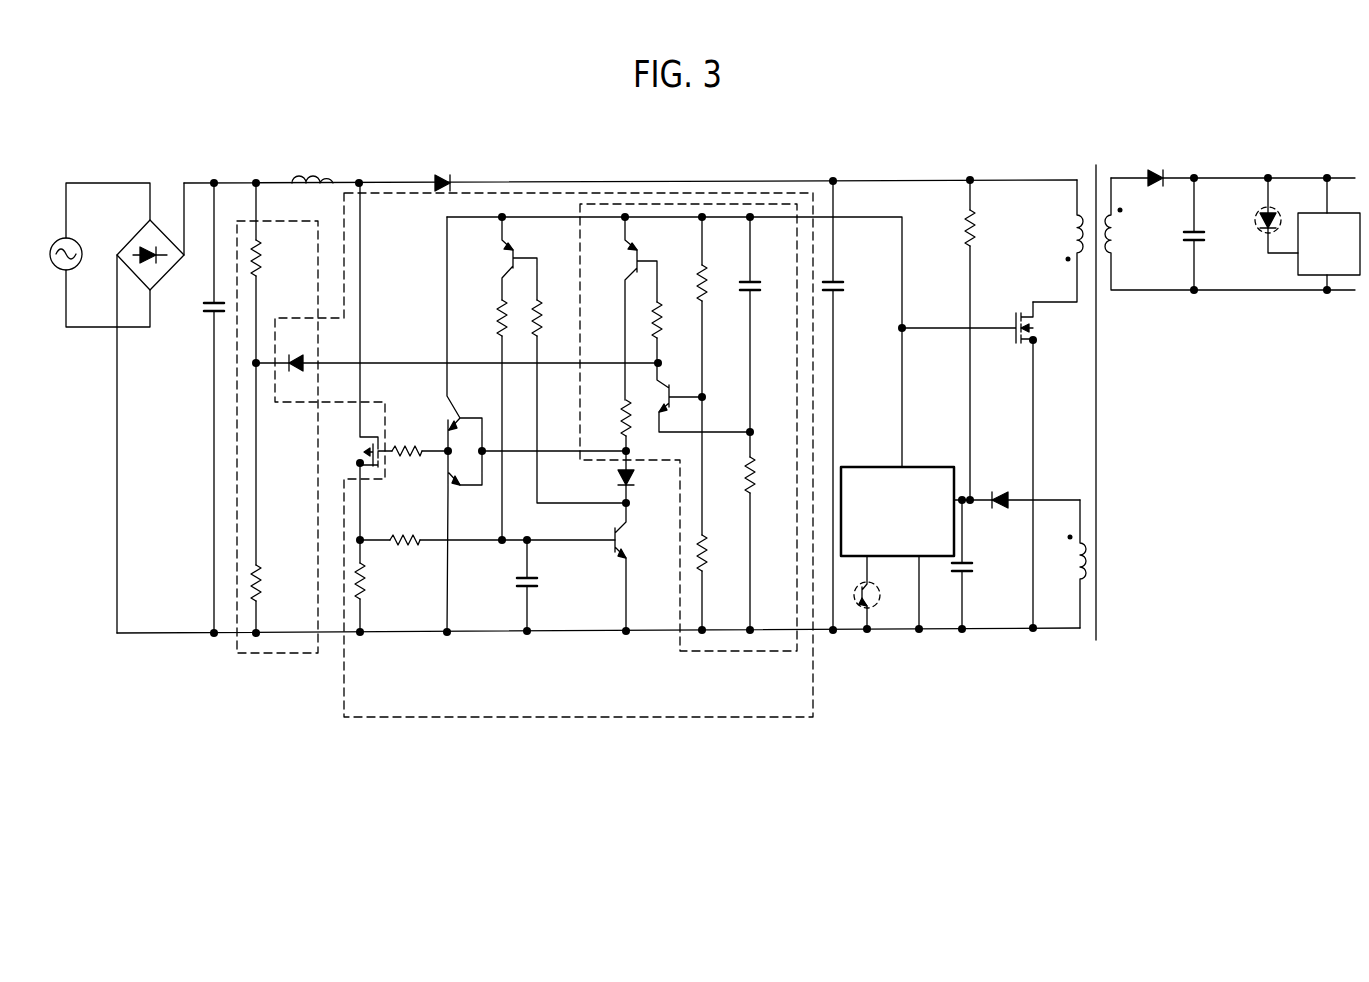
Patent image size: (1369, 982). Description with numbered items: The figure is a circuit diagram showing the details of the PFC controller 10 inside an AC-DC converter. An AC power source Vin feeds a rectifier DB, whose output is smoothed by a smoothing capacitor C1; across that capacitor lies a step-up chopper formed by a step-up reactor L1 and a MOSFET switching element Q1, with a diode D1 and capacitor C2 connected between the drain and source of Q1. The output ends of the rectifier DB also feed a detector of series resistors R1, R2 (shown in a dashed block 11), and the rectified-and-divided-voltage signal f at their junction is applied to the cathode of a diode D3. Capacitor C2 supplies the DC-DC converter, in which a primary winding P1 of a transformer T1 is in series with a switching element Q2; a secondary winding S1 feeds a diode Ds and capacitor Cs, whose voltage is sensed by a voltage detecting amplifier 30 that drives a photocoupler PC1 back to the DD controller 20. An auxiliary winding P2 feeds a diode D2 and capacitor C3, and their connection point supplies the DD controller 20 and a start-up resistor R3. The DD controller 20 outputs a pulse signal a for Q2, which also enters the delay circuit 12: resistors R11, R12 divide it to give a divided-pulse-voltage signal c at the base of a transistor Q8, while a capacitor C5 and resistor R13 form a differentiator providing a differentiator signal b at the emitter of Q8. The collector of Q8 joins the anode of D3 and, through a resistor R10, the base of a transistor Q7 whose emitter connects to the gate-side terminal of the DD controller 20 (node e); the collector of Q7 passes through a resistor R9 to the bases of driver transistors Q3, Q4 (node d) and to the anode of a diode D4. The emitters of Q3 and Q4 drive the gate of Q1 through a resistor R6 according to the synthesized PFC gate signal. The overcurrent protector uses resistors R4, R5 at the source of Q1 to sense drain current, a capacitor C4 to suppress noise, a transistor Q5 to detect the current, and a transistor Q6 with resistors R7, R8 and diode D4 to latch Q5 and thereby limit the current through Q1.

The AC power source Vin is at (100, 255).
The rectifier DB is at (167, 280).
The smoothing capacitor C1 is at (207, 408).
The resistor R1 is at (269, 273).
The resistor R2 is at (270, 498).
The input voltage detection circuit 11 is at (285, 653).
The rectified-and-divided-voltage signal f is at (262, 412).
The step-up reactor L1 is at (332, 163).
The diode D1 is at (444, 169).
The PFC controller 10 is at (640, 718).
The diode D3 is at (457, 347).
The node e is at (394, 357).
The switching element Q1 is at (361, 361).
The resistor R6 is at (420, 437).
The node d is at (437, 432).
The transistor Q3 is at (448, 334).
The transistor Q4 is at (450, 542).
The resistor R5 is at (487, 522).
The resistor R4 is at (376, 586).
The capacitor C4 is at (513, 585).
The transistor Q6 is at (503, 258).
The resistor R7 is at (488, 420).
The resistor R8 is at (579, 401).
The transistor Q7 is at (647, 308).
The resistor R10 is at (676, 332).
The resistor R9 is at (609, 425).
The transistor Q8 is at (690, 397).
The diode D4 is at (643, 477).
The transistor Q5 is at (636, 567).
The resistor R11 is at (721, 307).
The resistor R12 is at (723, 513).
The divided-pulse-voltage signal c is at (710, 377).
The capacitor C5 is at (764, 324).
The differentiator signal b is at (756, 399).
The resistor R13 is at (768, 531).
The delay circuit 12 is at (700, 652).
The pulse signal a is at (875, 211).
The capacitor C2 is at (848, 405).
The DD controller 20 is at (878, 466).
The photocoupler PC1 is at (1084, 402).
The resistor R3 is at (956, 340).
The switching element Q2 is at (967, 453).
The primary winding P1 is at (1058, 241).
The transformer T1 is at (1092, 387).
The secondary winding S1 is at (1230, 234).
The diode Ds is at (1233, 164).
The capacitor Cs is at (1208, 234).
The voltage detecting amplifier 30 is at (1313, 276).
The diode D2 is at (1003, 516).
The capacitor C3 is at (978, 564).
The auxiliary winding P2 is at (1064, 564).